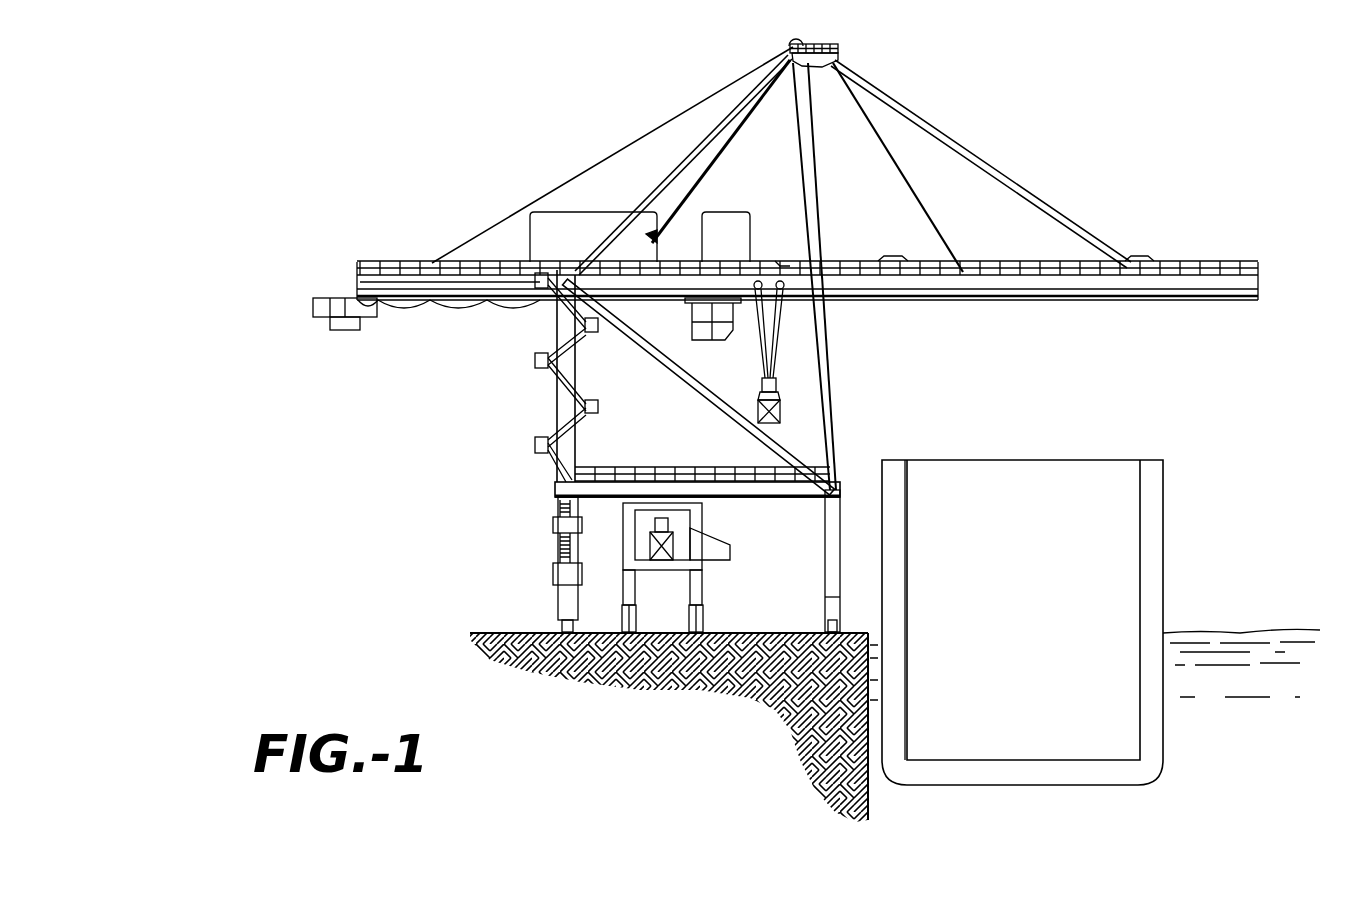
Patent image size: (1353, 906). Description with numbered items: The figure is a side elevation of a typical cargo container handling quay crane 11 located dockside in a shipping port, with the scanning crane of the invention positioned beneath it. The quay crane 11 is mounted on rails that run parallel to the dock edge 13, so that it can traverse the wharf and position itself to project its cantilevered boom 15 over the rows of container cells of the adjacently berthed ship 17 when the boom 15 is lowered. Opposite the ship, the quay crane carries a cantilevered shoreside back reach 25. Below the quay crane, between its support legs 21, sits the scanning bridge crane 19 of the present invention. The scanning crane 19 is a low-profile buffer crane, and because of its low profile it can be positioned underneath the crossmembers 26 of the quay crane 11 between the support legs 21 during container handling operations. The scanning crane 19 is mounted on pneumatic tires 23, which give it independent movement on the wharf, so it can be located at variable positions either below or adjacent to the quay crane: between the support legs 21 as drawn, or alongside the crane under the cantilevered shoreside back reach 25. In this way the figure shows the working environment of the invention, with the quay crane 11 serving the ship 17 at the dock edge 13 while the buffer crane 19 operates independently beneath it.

The quay crane 11 is at (933, 84).
The dock edge 13 is at (870, 690).
The cantilevered boom 15 is at (1160, 278).
The ship 17 is at (1016, 567).
The scanning bridge crane 19 is at (720, 550).
The support legs 21 is at (555, 578).
The pneumatic tires 23 is at (626, 626).
The cantilevered shoreside back reach 25 is at (430, 285).
The crossmembers 26 is at (780, 498).